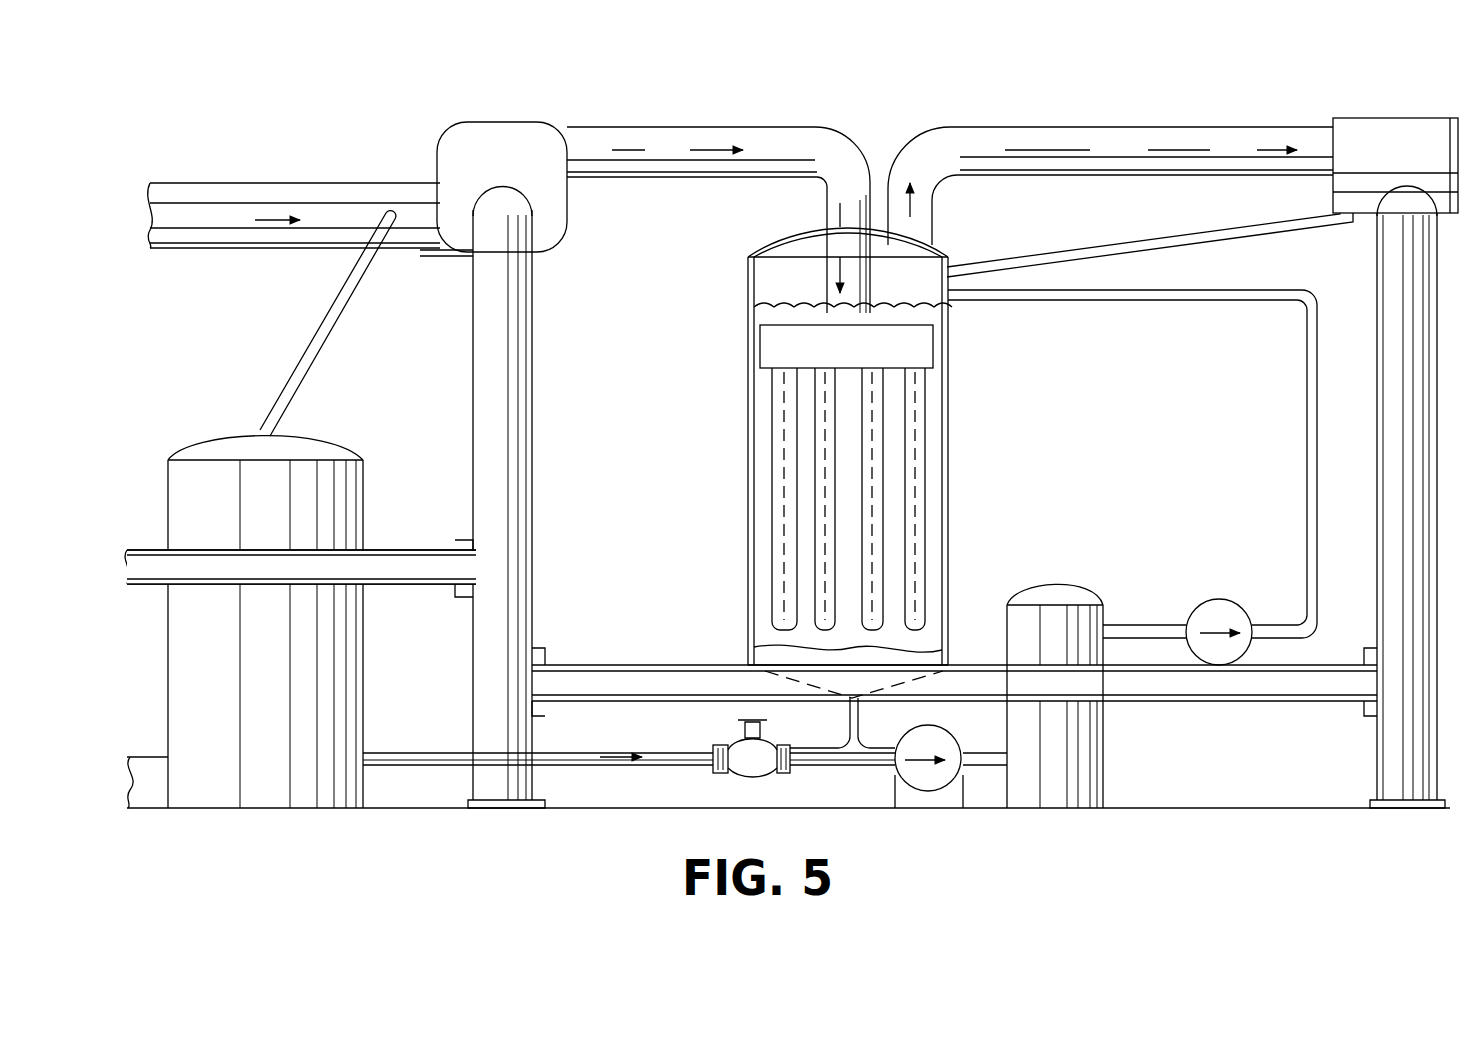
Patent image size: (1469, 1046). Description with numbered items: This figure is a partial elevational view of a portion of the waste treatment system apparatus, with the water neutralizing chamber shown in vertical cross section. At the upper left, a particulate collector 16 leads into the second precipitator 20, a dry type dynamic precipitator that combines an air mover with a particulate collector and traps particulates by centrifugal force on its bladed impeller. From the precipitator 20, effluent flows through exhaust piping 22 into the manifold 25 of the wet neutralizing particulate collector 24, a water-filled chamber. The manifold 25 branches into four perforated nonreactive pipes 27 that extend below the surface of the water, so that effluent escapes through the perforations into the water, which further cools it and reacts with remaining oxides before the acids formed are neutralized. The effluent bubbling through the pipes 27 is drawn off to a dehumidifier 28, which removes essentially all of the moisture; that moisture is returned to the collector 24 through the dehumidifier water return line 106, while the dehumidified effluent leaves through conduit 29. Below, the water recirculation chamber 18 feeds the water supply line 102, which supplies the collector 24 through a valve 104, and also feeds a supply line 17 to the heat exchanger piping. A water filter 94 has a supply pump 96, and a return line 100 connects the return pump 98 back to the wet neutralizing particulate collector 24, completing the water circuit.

The particulate collector 16 is at (300, 190).
The supply line 17 is at (350, 290).
The water recirculation chamber 18 is at (310, 447).
The second precipitator 20 is at (508, 135).
The exhaust piping 22 is at (668, 163).
The wet neutralizing particulate collector 24 is at (962, 440).
The manifold 25 is at (846, 346).
The perforated nonreactive pipes 27 is at (820, 452).
The dehumidifier 28 is at (1398, 130).
The conduit 29 is at (1102, 163).
The water filter 94 is at (1065, 583).
The supply pump 96 is at (944, 748).
The return pump 98 is at (1232, 612).
The return line 100 is at (1307, 434).
The water supply line 102 is at (670, 755).
The valve 104 is at (760, 768).
The dehumidifier water return line 106 is at (1233, 238).